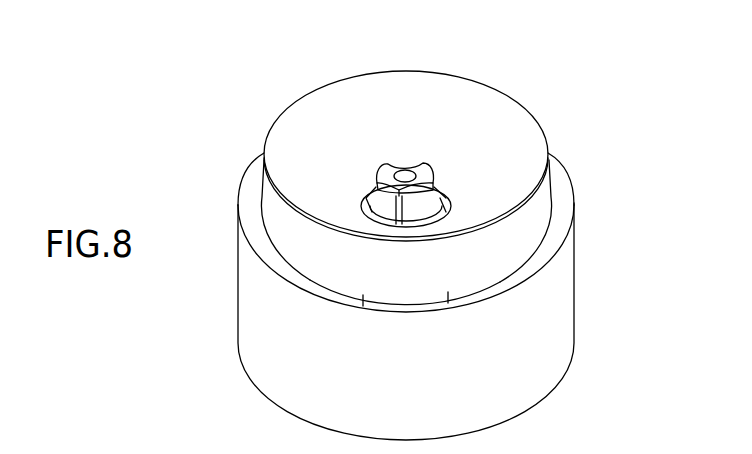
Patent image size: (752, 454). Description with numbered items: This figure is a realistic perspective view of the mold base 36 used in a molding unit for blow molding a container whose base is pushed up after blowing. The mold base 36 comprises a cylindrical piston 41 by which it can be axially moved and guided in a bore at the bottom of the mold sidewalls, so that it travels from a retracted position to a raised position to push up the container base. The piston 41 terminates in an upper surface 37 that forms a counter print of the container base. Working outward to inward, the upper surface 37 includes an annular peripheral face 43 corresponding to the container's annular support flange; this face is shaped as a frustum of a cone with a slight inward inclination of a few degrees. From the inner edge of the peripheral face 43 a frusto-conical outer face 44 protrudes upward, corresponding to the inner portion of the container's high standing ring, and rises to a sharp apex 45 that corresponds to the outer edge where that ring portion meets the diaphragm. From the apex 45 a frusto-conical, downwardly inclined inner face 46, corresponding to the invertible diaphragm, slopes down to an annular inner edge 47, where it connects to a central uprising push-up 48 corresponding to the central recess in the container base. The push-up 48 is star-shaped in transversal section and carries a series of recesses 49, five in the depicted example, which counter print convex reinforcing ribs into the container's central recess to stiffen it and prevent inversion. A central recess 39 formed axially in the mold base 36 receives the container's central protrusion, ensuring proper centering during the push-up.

The mold base 36 is at (430, 235).
The upper surface 37 is at (402, 136).
The central recess 39 is at (404, 176).
The cylindrical piston 41 is at (558, 322).
The annular peripheral face 43 is at (247, 212).
The frusto-conical outer face 44 is at (540, 202).
The sharp apex 45 is at (272, 127).
The frusto-conical downwardly inclined inner face 46 is at (519, 145).
The annular inner edge 47 is at (366, 206).
The central uprising push-up 48 is at (436, 163).
The recesses 49 is at (388, 212).